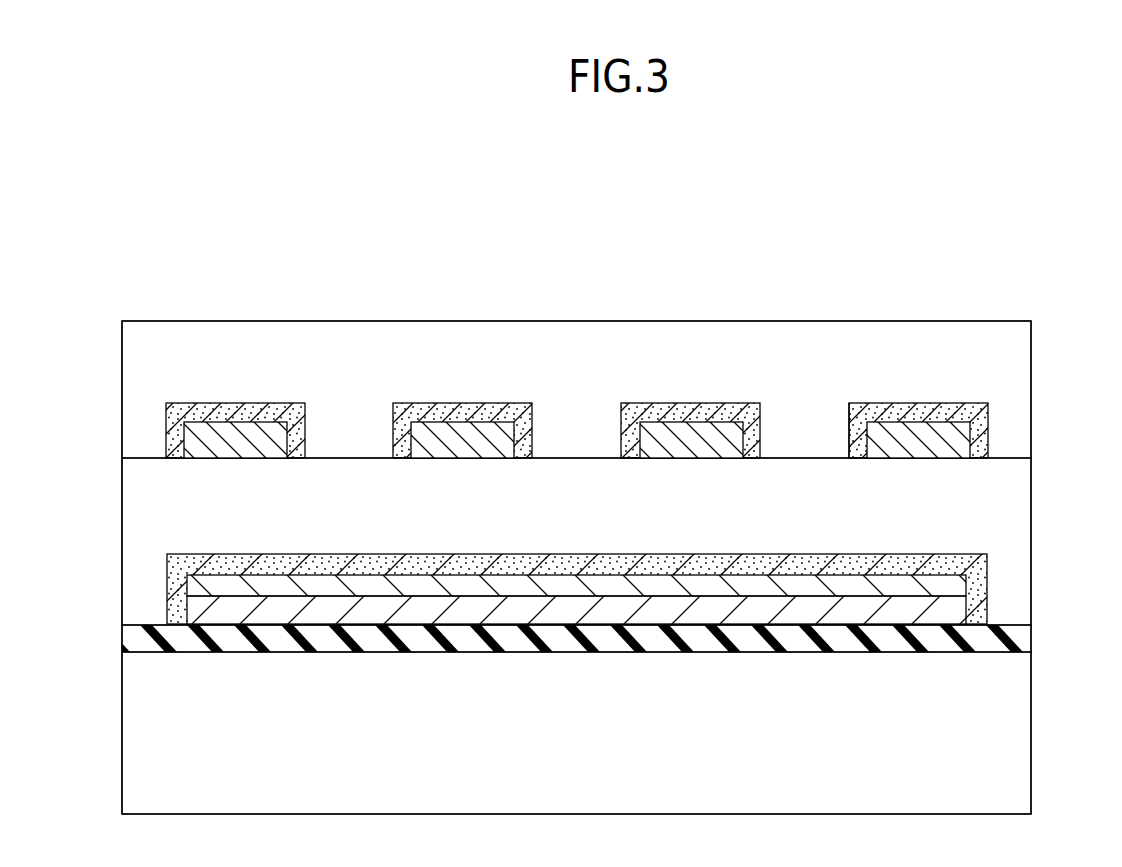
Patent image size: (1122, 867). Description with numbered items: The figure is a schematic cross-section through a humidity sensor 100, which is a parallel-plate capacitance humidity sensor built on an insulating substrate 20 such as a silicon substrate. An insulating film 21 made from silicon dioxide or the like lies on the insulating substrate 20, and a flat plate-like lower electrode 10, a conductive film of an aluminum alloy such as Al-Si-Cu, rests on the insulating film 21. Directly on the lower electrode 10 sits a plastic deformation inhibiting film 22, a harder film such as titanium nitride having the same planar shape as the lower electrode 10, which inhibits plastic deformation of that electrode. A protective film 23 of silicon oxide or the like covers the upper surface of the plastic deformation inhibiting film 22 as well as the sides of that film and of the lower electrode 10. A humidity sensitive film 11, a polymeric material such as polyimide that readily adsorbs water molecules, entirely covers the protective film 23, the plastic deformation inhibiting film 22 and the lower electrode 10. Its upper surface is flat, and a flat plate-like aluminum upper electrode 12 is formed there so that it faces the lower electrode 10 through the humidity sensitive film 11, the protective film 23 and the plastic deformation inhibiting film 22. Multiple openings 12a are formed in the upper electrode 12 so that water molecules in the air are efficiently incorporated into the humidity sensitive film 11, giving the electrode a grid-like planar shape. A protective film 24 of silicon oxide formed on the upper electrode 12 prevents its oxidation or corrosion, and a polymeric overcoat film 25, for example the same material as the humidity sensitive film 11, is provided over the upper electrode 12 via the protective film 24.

The humidity sensor 100 is at (172, 282).
The overcoat film 25 is at (1013, 346).
The protective film 24 is at (977, 412).
The upper electrode 12 is at (963, 438).
The opening 12a is at (846, 430).
The humidity sensitive film 11 is at (1013, 484).
The protective film 23 is at (980, 562).
The plastic deformation inhibiting film 22 is at (958, 583).
The lower electrode 10 is at (958, 610).
The insulating film 21 is at (1018, 633).
The insulating substrate 20 is at (1015, 733).